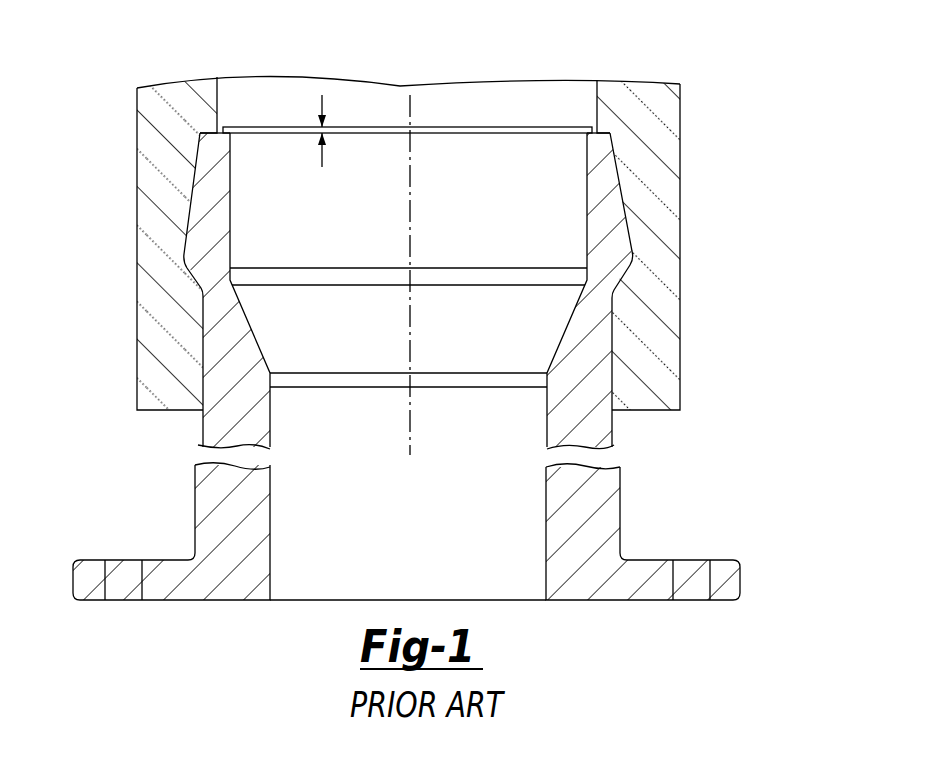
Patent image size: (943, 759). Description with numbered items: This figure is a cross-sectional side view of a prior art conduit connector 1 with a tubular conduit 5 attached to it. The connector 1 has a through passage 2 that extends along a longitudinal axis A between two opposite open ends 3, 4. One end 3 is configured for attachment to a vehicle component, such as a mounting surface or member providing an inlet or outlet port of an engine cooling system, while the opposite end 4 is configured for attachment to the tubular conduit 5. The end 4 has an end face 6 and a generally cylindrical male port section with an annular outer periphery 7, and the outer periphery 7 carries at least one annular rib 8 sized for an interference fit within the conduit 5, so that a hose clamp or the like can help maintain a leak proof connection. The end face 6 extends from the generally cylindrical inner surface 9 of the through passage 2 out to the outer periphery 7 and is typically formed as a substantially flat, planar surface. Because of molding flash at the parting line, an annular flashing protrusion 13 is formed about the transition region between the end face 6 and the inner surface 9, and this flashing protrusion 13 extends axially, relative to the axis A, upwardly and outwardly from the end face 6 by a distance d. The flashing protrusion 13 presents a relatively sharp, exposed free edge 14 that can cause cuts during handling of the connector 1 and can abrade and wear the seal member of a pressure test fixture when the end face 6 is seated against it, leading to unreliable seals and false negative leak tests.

The conduit connector 1 is at (418, 336).
The through passage 2 is at (403, 244).
The end 3 is at (605, 600).
The end 4 is at (604, 130).
The tubular conduit 5 is at (442, 214).
The end face 6 is at (208, 128).
The annular outer periphery 7 is at (186, 240).
The annular rib 8 is at (632, 237).
The inner surface 9 is at (232, 238).
The flashing protrusion 13 is at (249, 127).
The free edge 14 is at (498, 118).
The longitudinal axis A is at (410, 185).
The distance d is at (322, 164).